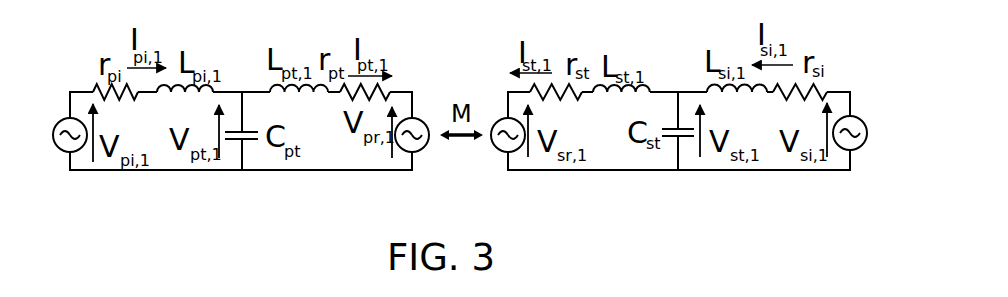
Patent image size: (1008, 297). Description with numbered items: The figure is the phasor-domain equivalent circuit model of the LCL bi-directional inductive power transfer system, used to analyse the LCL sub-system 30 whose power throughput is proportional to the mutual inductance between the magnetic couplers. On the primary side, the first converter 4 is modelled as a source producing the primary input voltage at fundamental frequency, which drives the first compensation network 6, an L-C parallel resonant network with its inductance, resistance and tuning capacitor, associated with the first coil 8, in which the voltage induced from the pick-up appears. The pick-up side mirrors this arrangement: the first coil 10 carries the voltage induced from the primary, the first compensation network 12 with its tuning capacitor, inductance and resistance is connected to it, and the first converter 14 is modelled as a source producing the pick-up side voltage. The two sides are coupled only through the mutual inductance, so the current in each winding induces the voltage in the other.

The first converter 4 is at (50, 115).
The first compensation network 6 is at (243, 81).
The first coil 8 is at (426, 109).
The first coil 10 is at (497, 159).
The first compensation network 12 is at (673, 81).
The first converter 14 is at (868, 109).
The LCL sub-system 30 is at (852, 71).